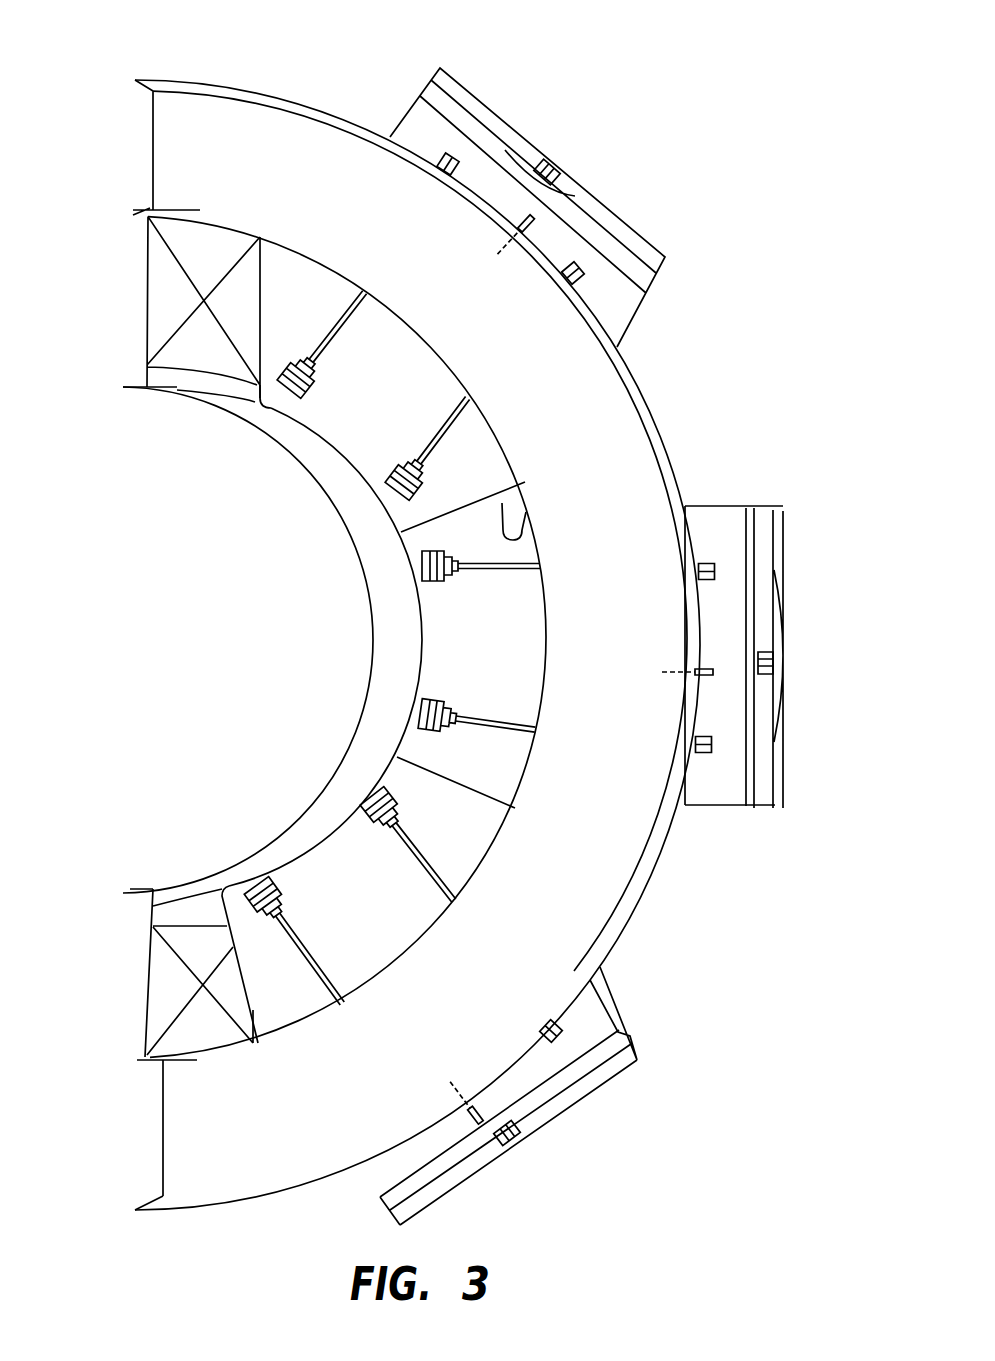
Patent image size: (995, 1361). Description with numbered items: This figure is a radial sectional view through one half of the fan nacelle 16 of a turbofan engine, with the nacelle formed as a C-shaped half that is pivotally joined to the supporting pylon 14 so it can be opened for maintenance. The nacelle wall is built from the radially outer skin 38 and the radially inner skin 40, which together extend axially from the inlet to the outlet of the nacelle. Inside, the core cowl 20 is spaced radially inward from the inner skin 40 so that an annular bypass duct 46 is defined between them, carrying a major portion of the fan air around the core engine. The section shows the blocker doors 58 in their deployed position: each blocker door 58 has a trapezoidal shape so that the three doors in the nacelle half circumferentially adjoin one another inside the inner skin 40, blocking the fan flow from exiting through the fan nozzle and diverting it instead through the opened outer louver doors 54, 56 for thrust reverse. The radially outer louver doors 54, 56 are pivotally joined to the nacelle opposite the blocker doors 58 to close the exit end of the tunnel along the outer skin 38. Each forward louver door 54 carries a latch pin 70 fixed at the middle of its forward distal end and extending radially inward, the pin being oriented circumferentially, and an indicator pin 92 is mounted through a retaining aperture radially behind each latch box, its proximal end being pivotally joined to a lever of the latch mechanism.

The supporting pylon 14 is at (142, 305).
The fan nacelle 16 is at (224, 78).
The core cowl 20 is at (398, 598).
The outer skin 38 is at (650, 438).
The inner skin 40 is at (532, 538).
The annular bypass duct 46 is at (424, 896).
The forward louver door 54 is at (640, 1057).
The louver door 56 is at (615, 993).
The blocker door 58 is at (413, 405).
The latch pin 70 is at (608, 646).
The indicator pin 92 is at (522, 232).